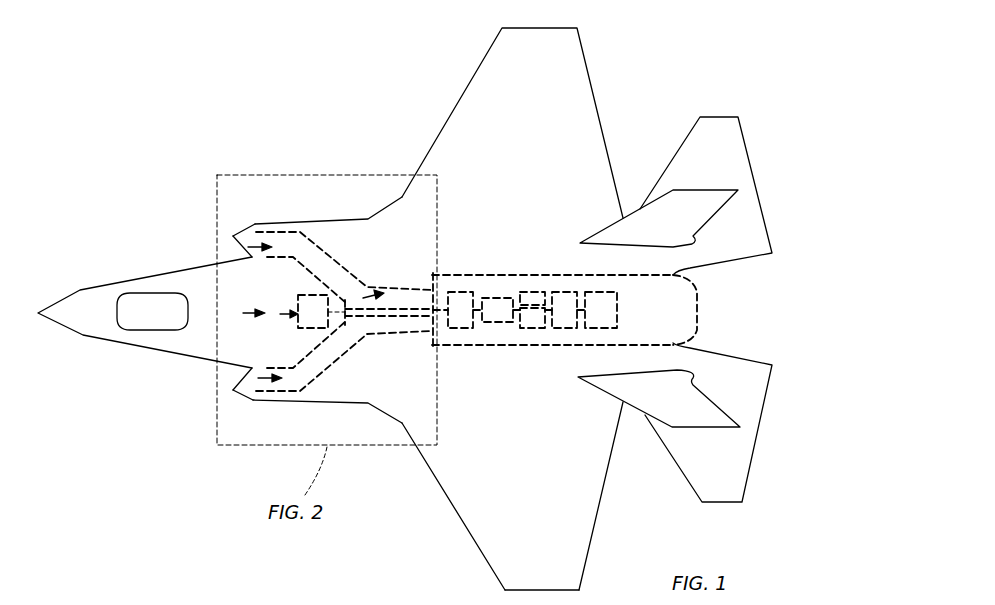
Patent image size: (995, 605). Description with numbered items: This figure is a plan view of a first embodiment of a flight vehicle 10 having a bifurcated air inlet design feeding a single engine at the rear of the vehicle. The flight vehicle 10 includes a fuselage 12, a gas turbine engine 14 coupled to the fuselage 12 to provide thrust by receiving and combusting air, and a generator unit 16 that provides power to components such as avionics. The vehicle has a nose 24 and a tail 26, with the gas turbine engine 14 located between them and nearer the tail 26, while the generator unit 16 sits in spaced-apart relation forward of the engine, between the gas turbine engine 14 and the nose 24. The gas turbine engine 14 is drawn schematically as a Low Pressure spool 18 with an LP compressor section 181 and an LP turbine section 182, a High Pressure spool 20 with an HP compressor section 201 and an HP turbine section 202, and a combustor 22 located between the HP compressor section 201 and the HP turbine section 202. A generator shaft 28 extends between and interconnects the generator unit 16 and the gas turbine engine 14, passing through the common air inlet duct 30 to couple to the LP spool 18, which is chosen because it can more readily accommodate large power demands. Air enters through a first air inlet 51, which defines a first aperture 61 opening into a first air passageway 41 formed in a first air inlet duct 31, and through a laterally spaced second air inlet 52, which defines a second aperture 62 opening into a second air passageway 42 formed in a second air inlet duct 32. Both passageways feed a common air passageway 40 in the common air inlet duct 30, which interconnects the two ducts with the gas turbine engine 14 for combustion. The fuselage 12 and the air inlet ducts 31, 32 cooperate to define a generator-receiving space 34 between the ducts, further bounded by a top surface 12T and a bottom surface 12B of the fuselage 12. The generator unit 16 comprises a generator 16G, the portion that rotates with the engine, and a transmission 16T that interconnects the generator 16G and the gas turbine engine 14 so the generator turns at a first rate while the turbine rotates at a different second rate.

The flight vehicle 10 is at (718, 78).
The fuselage 12 is at (398, 415).
The bottom surface 12B is at (455, 470).
The top surface 12T is at (480, 487).
The gas turbine engine 14 is at (462, 262).
The generator unit 16 is at (280, 315).
The generator 16G is at (283, 312).
The transmission 16T is at (347, 326).
The Low Pressure spool 18 is at (553, 438).
The LP compressor section 181 is at (467, 330).
The LP turbine section 182 is at (600, 330).
The High Pressure spool 20 is at (584, 178).
The HP compressor section 201 is at (500, 295).
The HP turbine section 202 is at (563, 292).
The combustor 22 is at (557, 292).
The nose 24 is at (47, 340).
The tail 26 is at (774, 171).
The generator shaft 28 is at (400, 290).
The common air inlet duct 30 is at (404, 288).
The first air inlet duct 31 is at (298, 393).
The second air inlet duct 32 is at (256, 226).
The generator-receiving space 34 is at (243, 313).
The common air passageway 40 is at (363, 296).
The first air passageway 41 is at (258, 380).
The second air passageway 42 is at (248, 247).
The first air inlet 51 is at (250, 368).
The second air inlet 52 is at (250, 257).
The first aperture 61 is at (234, 388).
The second aperture 62 is at (232, 241).